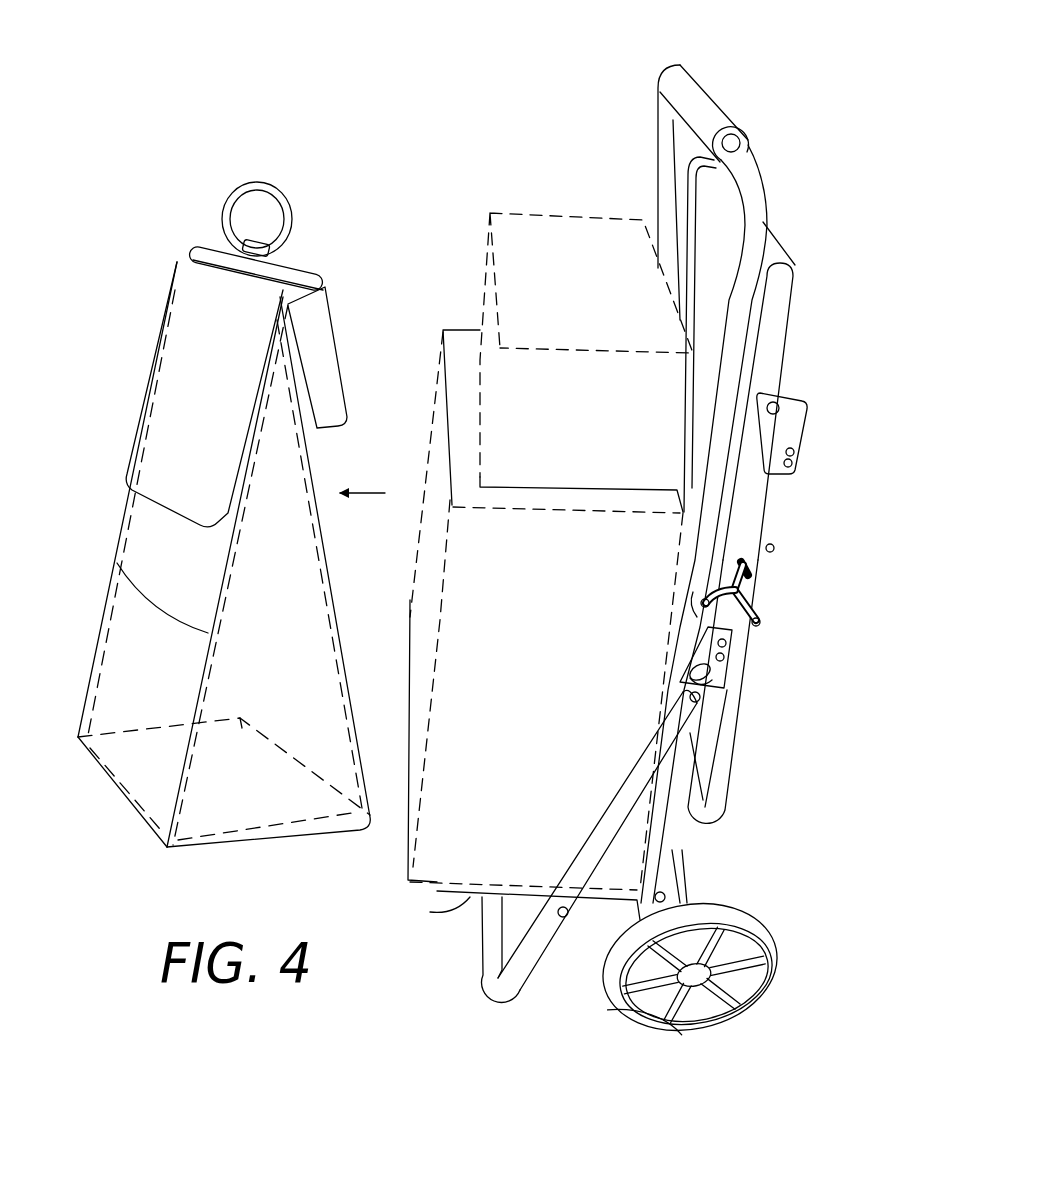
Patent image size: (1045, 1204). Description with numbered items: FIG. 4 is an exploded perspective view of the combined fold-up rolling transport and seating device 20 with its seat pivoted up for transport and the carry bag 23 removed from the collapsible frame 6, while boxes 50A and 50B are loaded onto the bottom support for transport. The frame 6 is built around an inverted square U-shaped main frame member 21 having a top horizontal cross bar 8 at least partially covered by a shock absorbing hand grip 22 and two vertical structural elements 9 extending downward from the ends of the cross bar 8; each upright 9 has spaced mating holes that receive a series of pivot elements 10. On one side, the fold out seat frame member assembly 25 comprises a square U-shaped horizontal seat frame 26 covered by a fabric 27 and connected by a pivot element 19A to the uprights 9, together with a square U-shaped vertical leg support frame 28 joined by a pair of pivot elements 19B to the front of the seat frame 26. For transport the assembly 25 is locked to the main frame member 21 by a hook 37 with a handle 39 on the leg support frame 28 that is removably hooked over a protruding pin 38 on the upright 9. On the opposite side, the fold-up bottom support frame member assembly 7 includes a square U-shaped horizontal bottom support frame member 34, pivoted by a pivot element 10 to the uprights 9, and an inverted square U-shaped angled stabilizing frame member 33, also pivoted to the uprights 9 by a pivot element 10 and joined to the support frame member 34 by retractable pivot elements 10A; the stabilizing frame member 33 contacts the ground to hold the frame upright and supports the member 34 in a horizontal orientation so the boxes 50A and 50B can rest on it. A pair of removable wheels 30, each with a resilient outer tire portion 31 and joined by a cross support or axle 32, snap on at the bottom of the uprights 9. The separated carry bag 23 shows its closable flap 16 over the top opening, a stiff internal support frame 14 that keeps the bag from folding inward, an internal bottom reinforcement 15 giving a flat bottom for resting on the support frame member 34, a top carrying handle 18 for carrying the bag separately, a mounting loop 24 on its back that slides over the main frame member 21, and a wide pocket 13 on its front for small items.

The collapsible frame 6 is at (782, 176).
The fold-up bottom support frame member assembly 7 is at (462, 947).
The top horizontal cross bar 8 is at (745, 150).
The vertical structural elements 9 is at (662, 187).
The pivot elements 10 is at (690, 697).
The retractable pivot elements 10A is at (550, 900).
The wide pocket 13 is at (159, 600).
The stiff internal support frame 14 is at (327, 600).
The internal bottom reinforcement 15 is at (121, 767).
The closable flap 16 is at (152, 383).
The top carrying handle 18 is at (250, 192).
The pivot element 19A is at (703, 637).
The pivot elements 19B is at (800, 427).
The combined fold-up rolling transport and seating device 20 is at (469, 73).
The main frame member 21 is at (650, 157).
The shock absorbing hand grip 22 is at (718, 118).
The carry bag 23 is at (103, 612).
The mounting loop 24 is at (303, 263).
The fold out seat frame member assembly 25 is at (850, 297).
The horizontal seat frame 26 is at (787, 347).
The fabric 27 is at (777, 250).
The vertical leg support frame 28 is at (747, 713).
The removable wheels 30 is at (775, 918).
The resilient outer tire portion 31 is at (775, 953).
The cross support or axle 32 is at (680, 884).
The stabilizing frame member 33 is at (537, 947).
The bottom support frame member 34 is at (460, 899).
The hook 37 is at (697, 590).
The protruding pin 38 is at (700, 604).
The handle 39 is at (740, 583).
The box 50A is at (490, 230).
The box 50B is at (443, 357).